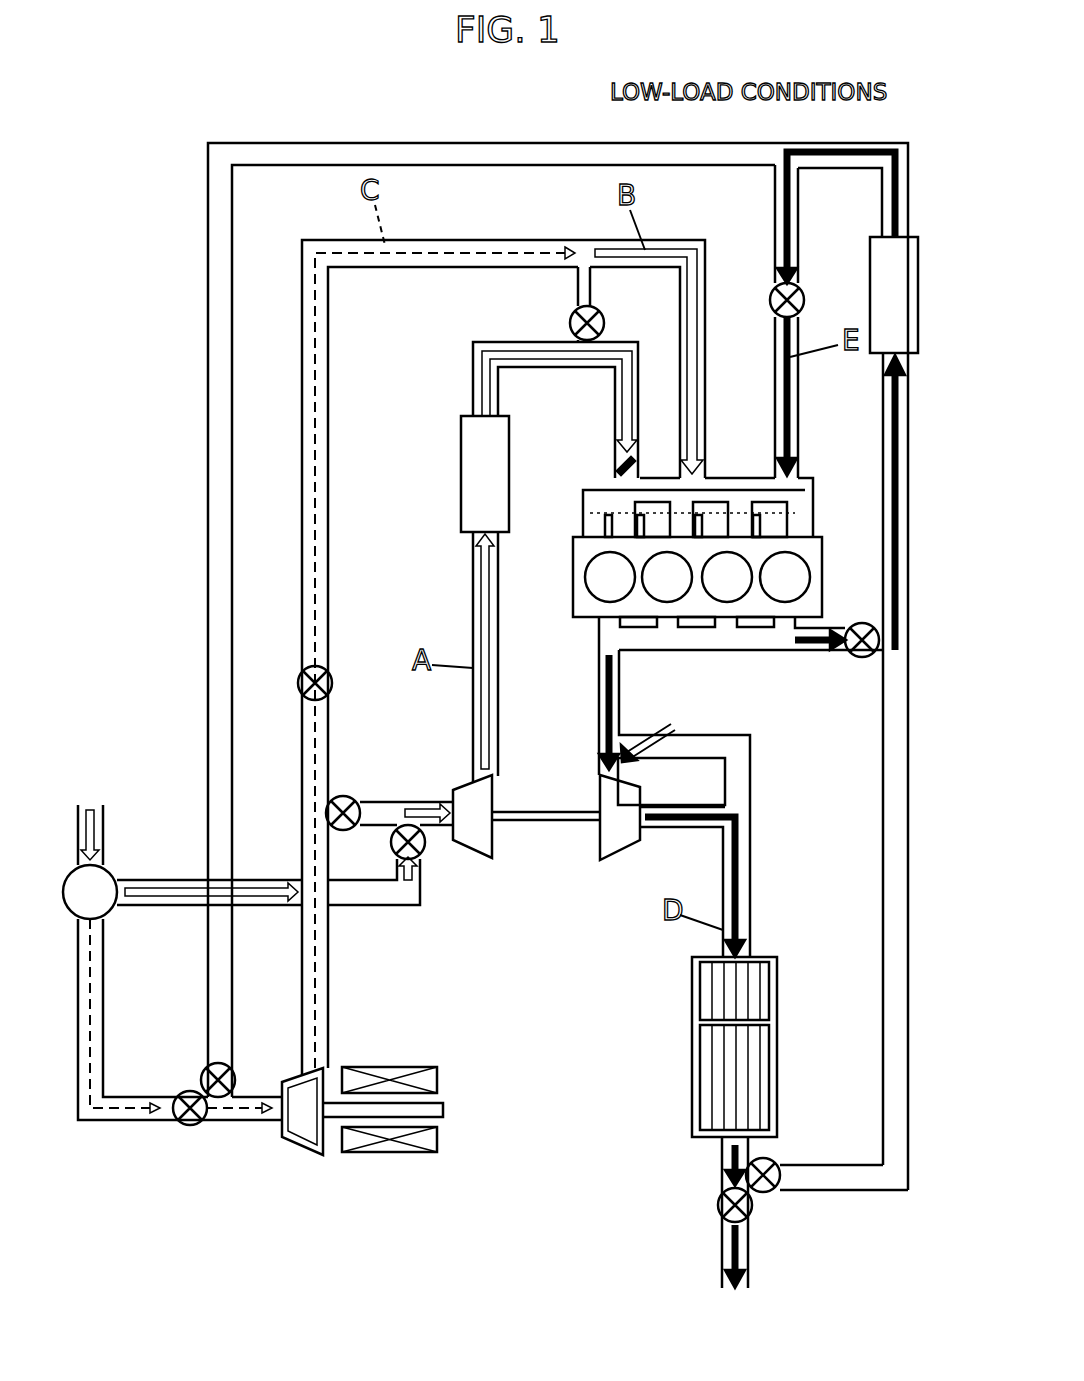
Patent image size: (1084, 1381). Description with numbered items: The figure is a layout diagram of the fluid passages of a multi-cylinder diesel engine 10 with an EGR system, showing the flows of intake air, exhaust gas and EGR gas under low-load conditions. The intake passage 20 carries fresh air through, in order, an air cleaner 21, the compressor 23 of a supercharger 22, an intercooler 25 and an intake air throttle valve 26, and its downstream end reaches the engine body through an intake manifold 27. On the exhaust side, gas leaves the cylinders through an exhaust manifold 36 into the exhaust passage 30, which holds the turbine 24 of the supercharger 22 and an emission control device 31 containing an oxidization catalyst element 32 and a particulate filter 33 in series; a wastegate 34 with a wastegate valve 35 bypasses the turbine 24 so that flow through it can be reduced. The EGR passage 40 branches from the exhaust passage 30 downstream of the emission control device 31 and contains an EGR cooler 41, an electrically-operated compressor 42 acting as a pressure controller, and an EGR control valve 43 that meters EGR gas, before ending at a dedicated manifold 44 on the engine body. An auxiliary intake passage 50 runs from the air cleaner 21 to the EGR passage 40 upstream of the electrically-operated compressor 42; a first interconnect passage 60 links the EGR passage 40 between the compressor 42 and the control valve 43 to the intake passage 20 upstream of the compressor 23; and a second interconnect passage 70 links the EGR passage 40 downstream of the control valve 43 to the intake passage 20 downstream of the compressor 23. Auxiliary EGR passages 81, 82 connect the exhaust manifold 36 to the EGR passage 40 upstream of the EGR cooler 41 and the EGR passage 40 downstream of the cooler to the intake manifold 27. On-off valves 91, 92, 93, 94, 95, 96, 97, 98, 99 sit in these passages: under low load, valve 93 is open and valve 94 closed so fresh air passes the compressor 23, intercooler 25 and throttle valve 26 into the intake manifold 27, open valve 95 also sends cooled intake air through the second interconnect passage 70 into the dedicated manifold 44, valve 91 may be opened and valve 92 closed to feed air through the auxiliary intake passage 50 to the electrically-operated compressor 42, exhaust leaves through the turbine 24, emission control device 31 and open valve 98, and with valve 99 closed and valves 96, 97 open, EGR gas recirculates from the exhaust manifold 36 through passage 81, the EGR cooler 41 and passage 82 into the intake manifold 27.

The engine 10 is at (573, 580).
The intake passage 20 is at (615, 415).
The air cleaner 21 is at (110, 908).
The supercharger 22 is at (546, 876).
The compressor 23 is at (490, 860).
The turbine 24 is at (603, 856).
The intercooler 25 is at (461, 425).
The intake air throttle valve 26 is at (616, 468).
The intake manifold 27 is at (815, 505).
The exhaust passage 30 is at (599, 718).
The emission control device 31 is at (672, 1047).
The oxidization catalyst element 32 is at (692, 990).
The particulate filter 33 is at (695, 1077).
The wastegate 34 is at (720, 745).
The wastegate valve 35 is at (650, 722).
The exhaust manifold 36 is at (599, 640).
The EGR passage 40 is at (532, 142).
The EGR cooler 41 is at (870, 255).
The electrically-operated compressor 42 is at (320, 1157).
The EGR control valve 43 is at (300, 680).
The dedicated manifold 44 is at (583, 520).
The auxiliary intake passage 50 is at (120, 1122).
The first interconnect passage 60 is at (382, 800).
The second interconnect passage 70 is at (578, 290).
The auxiliary EGR passage 81 is at (840, 655).
The auxiliary EGR passage 82 is at (772, 230).
The valve 91 is at (188, 1124).
The valve 92 is at (201, 1078).
The valve 93 is at (424, 852).
The valve 94 is at (328, 812).
The valve 95 is at (604, 320).
The valve 96 is at (862, 623).
The valve 97 is at (770, 300).
The valve 98 is at (717, 1202).
The valve 99 is at (765, 1192).